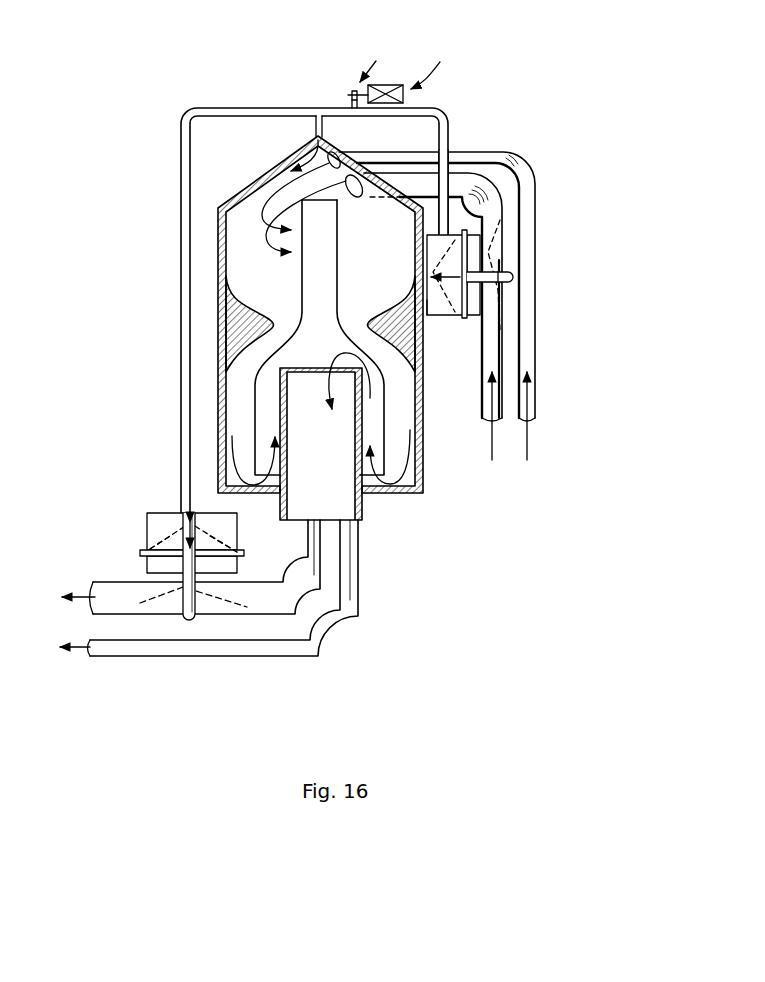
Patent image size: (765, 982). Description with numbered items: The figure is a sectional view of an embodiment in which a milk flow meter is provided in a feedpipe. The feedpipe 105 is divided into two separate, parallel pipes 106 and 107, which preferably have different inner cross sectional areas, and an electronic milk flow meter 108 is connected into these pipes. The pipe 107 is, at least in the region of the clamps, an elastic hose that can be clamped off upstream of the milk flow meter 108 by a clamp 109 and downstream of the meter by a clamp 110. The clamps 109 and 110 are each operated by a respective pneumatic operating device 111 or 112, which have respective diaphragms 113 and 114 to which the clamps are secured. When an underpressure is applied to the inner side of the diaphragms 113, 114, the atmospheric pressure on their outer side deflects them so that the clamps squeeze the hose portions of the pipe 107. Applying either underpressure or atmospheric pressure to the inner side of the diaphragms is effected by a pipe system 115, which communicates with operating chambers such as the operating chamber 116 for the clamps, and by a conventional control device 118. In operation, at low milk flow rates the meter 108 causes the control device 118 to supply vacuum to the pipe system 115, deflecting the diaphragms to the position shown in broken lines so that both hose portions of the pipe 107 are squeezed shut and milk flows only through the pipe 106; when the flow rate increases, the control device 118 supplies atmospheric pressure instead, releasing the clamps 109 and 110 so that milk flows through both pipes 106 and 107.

The feedpipe 105 is at (474, 136).
The pipe 106 is at (525, 205).
The pipe 107 is at (498, 253).
The electronic milk flow meter 108 is at (399, 402).
The clamp 109 is at (503, 283).
The clamp 110 is at (197, 617).
The pneumatic operating device 111 is at (466, 310).
The pneumatic operating device 112 is at (168, 530).
The diaphragm 113 is at (468, 260).
The diaphragm 114 is at (217, 550).
The pipe system 115 is at (228, 108).
The operating chamber 116 is at (430, 318).
The control device 118 is at (398, 85).